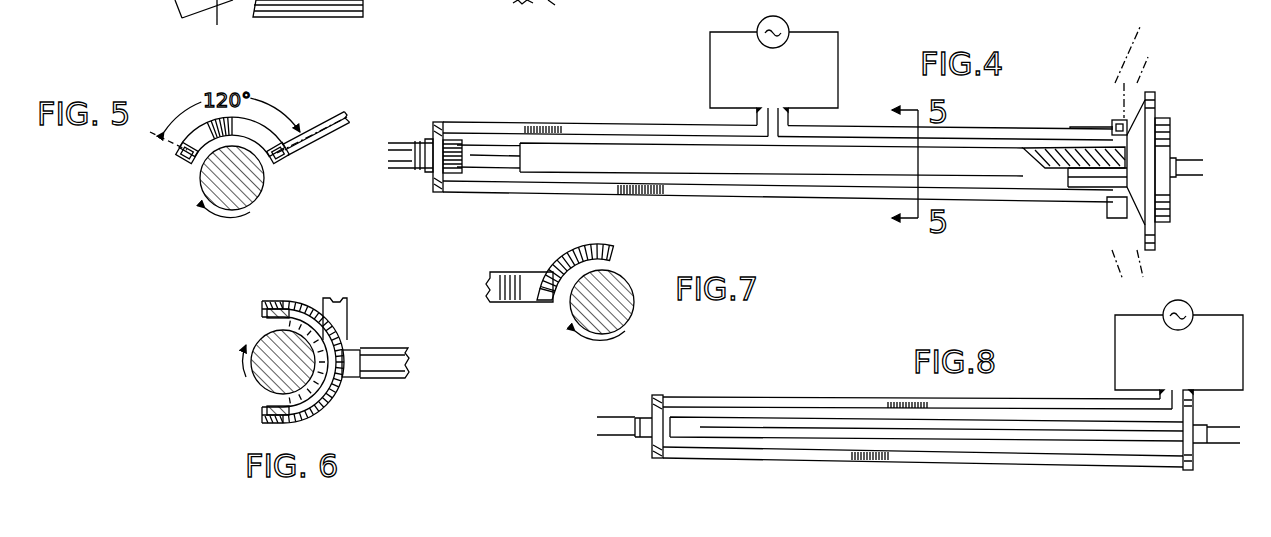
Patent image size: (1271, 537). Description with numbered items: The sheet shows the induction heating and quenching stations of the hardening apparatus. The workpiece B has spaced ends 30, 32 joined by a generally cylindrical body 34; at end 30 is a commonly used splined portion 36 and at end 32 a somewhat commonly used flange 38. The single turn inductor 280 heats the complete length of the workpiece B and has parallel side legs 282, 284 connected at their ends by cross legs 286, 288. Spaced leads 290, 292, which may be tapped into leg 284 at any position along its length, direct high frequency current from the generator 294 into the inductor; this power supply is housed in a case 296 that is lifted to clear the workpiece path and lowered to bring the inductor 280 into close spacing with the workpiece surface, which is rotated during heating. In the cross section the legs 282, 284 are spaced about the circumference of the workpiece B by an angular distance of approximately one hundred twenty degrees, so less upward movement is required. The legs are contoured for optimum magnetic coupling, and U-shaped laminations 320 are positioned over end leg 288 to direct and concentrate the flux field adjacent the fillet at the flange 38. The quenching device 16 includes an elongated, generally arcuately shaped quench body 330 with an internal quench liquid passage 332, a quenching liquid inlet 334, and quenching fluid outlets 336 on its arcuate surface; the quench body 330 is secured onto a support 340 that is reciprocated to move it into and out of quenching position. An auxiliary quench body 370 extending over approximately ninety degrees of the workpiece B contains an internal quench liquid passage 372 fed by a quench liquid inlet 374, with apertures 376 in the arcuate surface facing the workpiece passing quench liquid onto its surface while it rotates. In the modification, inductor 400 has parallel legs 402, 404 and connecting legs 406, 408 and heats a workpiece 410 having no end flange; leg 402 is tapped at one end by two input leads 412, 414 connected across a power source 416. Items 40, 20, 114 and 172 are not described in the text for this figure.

In FIG. 5, the cylindrical body 34 is at (260, 200).
In FIG. 6, the cylindrical body 34 is at (250, 368).
In FIG. 7, the cylindrical body 34 is at (632, 307).
In FIG. 4, the cylindrical body 34 is at (635, 145).
In FIG. 5, the workpiece B is at (200, 185).
In FIG. 6, the workpiece B is at (262, 380).
In FIG. 7, the workpiece B is at (630, 325).
In FIG. 4, the workpiece B is at (578, 140).
In FIG. 5, the single turn inductor 280 is at (257, 122).
In FIG. 4, the single turn inductor 280 is at (830, 190).
In FIG. 5, the side leg 282 is at (182, 160).
In FIG. 4, the side leg 282 is at (718, 200).
In FIG. 5, the side leg 284 is at (287, 160).
In FIG. 4, the side leg 284 is at (856, 125).
In FIG. 4, the cross leg 286 is at (434, 130).
In FIG. 5, the lead 290 is at (322, 115).
In FIG. 4, the end 30 is at (452, 140).
In FIG. 4, the splined portion 36 is at (461, 157).
In FIG. 4, the generator 294 is at (762, 20).
In FIG. 4, the case 296 is at (762, 100).
In FIG. 4, the lead 292 is at (784, 100).
In FIG. 4, the U-shaped laminations 320 is at (1112, 120).
In FIG. 4, the cross leg 288 is at (1130, 82).
In FIG. 4, the flange 38 is at (1140, 123).
In FIG. 4, the conical hub 40 is at (1080, 148).
In FIG. 4, the end 32 is at (1113, 170).
In FIG. 6, the quench body 330 is at (282, 305).
In FIG. 6, the internal quench liquid passage 332 is at (322, 415).
In FIG. 6, the quenching fluid outlets 336 is at (270, 319).
In FIG. 6, the quenching device 16 is at (300, 300).
In FIG. 6, the support 340 is at (340, 312).
In FIG. 6, the quenching liquid inlet 334 is at (397, 362).
In FIG. 7, the quench body 370 is at (593, 241).
In FIG. 7, the internal quench liquid passage 372 is at (572, 247).
In FIG. 7, the apertures 376 is at (583, 268).
In FIG. 7, the quench liquid inlet 374 is at (507, 303).
In FIG. 7, the member 20 is at (548, 254).
In FIG. 8, the inductor 400 is at (823, 398).
In FIG. 8, the parallel leg 402 is at (758, 397).
In FIG. 8, the parallel leg 404 is at (808, 462).
In FIG. 8, the connecting leg 406 is at (660, 415).
In FIG. 8, the connecting leg 408 is at (1183, 428).
In FIG. 8, the workpiece 410 is at (992, 437).
In FIG. 8, the input lead 412 is at (1168, 386).
In FIG. 8, the input lead 414 is at (1187, 388).
In FIG. 8, the power source 416 is at (1190, 305).
In FIG. 4, the fragment 114 is at (555, 11).
In FIG. 5, the fragment 172 is at (206, 26).